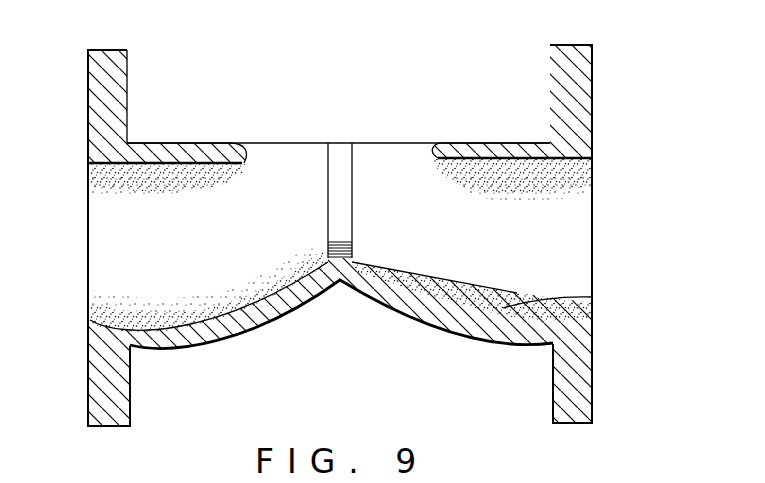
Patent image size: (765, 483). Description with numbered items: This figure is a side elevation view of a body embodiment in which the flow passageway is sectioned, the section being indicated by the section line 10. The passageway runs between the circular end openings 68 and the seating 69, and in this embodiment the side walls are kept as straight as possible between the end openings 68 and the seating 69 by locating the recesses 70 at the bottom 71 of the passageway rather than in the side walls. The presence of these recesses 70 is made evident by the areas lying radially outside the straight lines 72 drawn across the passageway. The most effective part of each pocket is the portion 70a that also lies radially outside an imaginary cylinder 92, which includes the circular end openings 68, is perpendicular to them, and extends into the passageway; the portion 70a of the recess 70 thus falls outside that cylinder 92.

The section line 10 is at (162, 137).
The end openings 68 is at (592, 201).
The seating 69 is at (322, 207).
The recesses 70 is at (450, 295).
The portion of the pocket 70a is at (480, 323).
The bottom of the passageway 71 is at (503, 312).
The straight lines 72 is at (517, 293).
The imaginary cylinder 92 is at (593, 297).